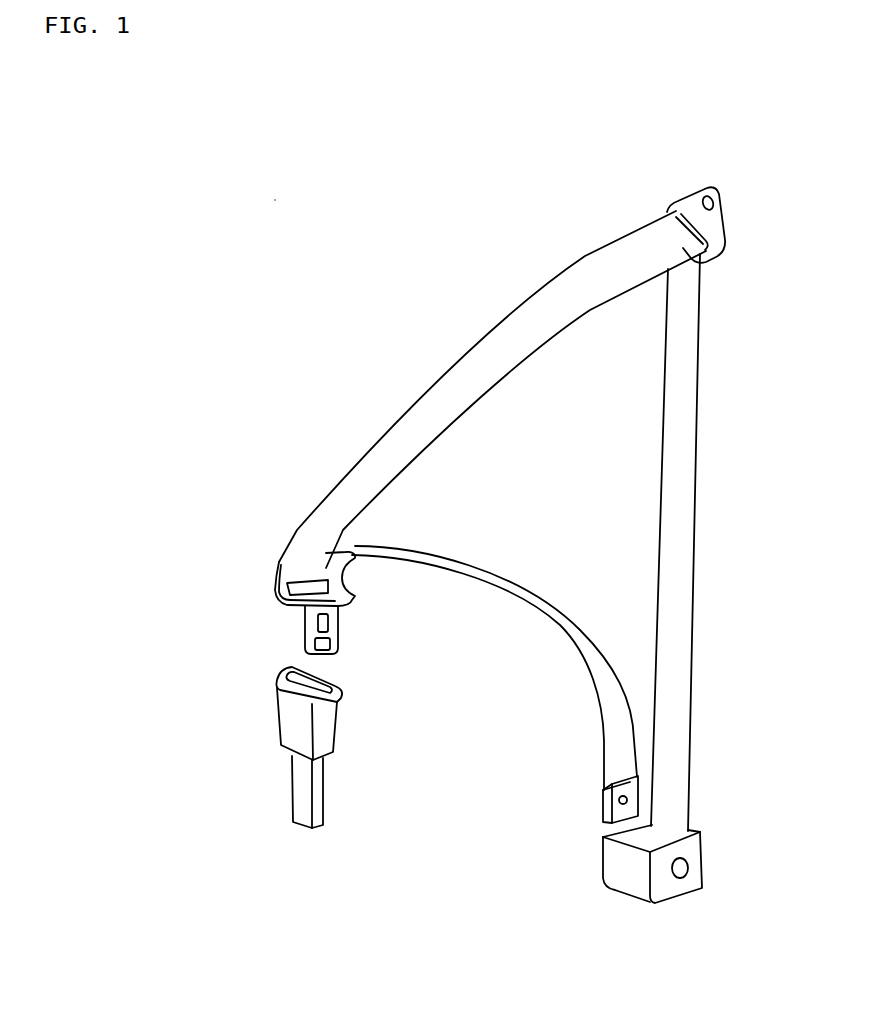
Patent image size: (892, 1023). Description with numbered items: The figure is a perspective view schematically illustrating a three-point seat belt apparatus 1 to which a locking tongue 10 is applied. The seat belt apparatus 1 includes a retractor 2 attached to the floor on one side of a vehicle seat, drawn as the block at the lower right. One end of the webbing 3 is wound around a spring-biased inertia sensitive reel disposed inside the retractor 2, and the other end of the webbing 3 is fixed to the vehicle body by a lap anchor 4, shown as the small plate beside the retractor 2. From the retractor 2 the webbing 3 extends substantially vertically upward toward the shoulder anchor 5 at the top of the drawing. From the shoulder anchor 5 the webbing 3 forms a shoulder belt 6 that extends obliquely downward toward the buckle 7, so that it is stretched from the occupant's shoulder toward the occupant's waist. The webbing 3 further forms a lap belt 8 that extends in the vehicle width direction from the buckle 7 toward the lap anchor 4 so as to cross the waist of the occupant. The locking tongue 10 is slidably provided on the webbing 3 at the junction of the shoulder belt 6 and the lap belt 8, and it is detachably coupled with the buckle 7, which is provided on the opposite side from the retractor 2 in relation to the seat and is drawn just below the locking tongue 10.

The seat belt apparatus 1 is at (428, 319).
The retractor 2 is at (684, 887).
The webbing 3 is at (678, 613).
The lap anchor 4 is at (600, 796).
The shoulder anchor 5 is at (684, 198).
The shoulder belt 6 is at (507, 323).
The buckle 7 is at (264, 724).
The lap belt 8 is at (507, 588).
The locking tongue 10 is at (263, 584).